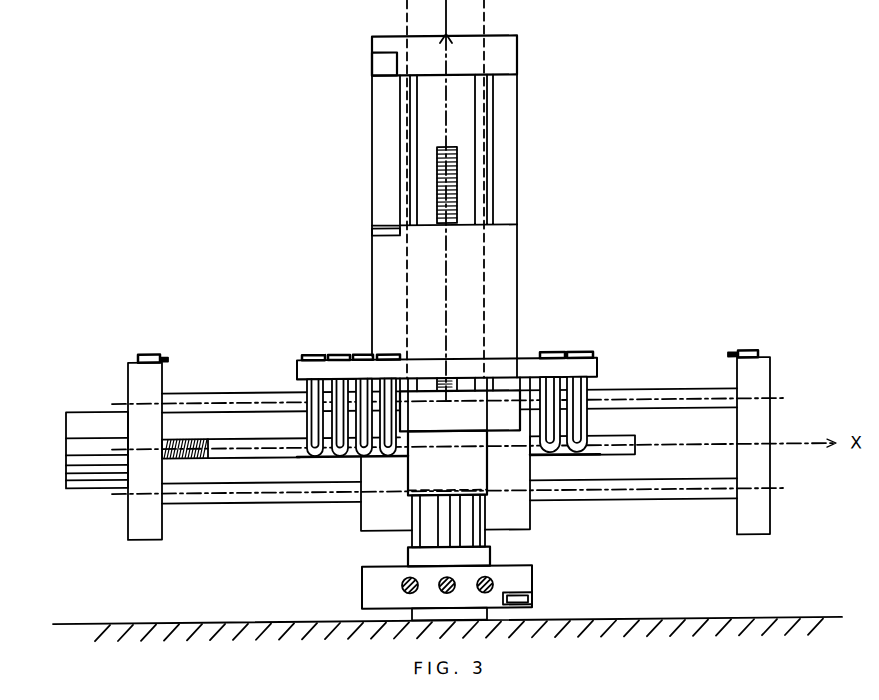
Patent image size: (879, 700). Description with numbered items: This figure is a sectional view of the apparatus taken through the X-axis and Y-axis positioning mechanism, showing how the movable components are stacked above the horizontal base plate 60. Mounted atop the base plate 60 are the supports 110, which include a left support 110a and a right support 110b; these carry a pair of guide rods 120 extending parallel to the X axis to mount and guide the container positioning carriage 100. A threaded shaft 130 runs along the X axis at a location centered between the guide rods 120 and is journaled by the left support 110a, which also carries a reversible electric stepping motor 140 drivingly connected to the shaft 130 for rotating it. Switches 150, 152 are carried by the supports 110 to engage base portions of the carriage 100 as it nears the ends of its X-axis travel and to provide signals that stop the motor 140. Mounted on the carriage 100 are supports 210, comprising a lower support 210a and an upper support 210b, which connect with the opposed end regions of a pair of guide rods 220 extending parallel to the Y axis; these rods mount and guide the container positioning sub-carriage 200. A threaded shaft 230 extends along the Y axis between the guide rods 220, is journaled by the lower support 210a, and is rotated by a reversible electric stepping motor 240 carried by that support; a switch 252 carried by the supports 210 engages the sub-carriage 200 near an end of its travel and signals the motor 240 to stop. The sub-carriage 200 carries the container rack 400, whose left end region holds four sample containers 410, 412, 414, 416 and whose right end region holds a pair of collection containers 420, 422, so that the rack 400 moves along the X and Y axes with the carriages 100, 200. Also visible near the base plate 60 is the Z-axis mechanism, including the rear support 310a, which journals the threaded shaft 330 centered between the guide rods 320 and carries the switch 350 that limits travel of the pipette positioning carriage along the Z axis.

The base plate 60 is at (743, 620).
The container positioning carriage 100 is at (521, 155).
The supports 110 is at (773, 523).
The left support 110a is at (163, 373).
The right support 110b is at (771, 378).
The guide rods 120 is at (190, 440).
The threaded shaft 130 is at (219, 457).
The reversible electric stepping motor 140 is at (90, 460).
The switch 150 is at (152, 352).
The switch 152 is at (752, 352).
The container positioning sub-carriage 200 is at (388, 262).
The supports 210 is at (499, 27).
The lower support 210a is at (438, 420).
The upper support 210b is at (518, 52).
The guide rods 220 is at (490, 95).
The threaded shaft 230 is at (457, 147).
The reversible electric stepping motor 240 is at (458, 540).
The switch 252 is at (375, 63).
The rear support 310a is at (533, 572).
The guide rods 320 is at (401, 584).
The threaded shaft 330 is at (447, 595).
The switch 350 is at (534, 604).
The container rack 400 is at (493, 357).
The sample container 410 is at (308, 354).
The sample container 412 is at (340, 354).
The sample container 414 is at (362, 354).
The sample container 416 is at (388, 354).
The collection container 420 is at (590, 390).
The collection container 422 is at (558, 455).